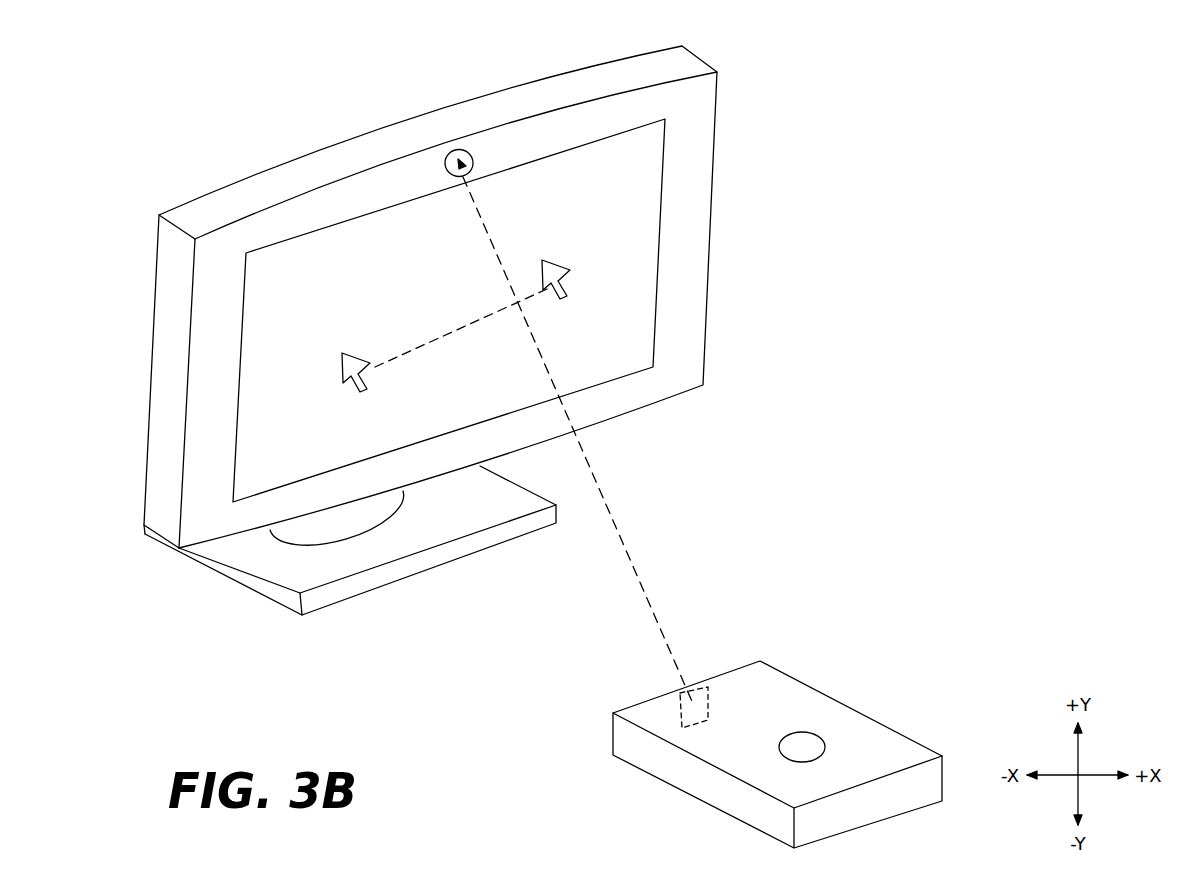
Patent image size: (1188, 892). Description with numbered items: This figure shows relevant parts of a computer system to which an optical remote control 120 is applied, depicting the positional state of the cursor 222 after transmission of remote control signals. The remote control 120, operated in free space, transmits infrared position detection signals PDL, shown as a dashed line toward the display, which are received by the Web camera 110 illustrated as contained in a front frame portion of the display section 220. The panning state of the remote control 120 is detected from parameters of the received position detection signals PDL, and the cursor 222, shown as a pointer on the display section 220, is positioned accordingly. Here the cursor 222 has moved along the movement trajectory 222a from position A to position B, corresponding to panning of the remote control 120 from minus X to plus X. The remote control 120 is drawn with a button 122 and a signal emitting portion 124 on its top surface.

The Web camera 110 is at (472, 158).
The remote control 120 is at (923, 783).
The button 122 is at (807, 740).
The light sensor 124 is at (705, 690).
The display section 220 is at (695, 268).
The cursor 222 is at (567, 277).
The movement trajectory 222a is at (442, 336).
The position detection signals PDL is at (618, 530).